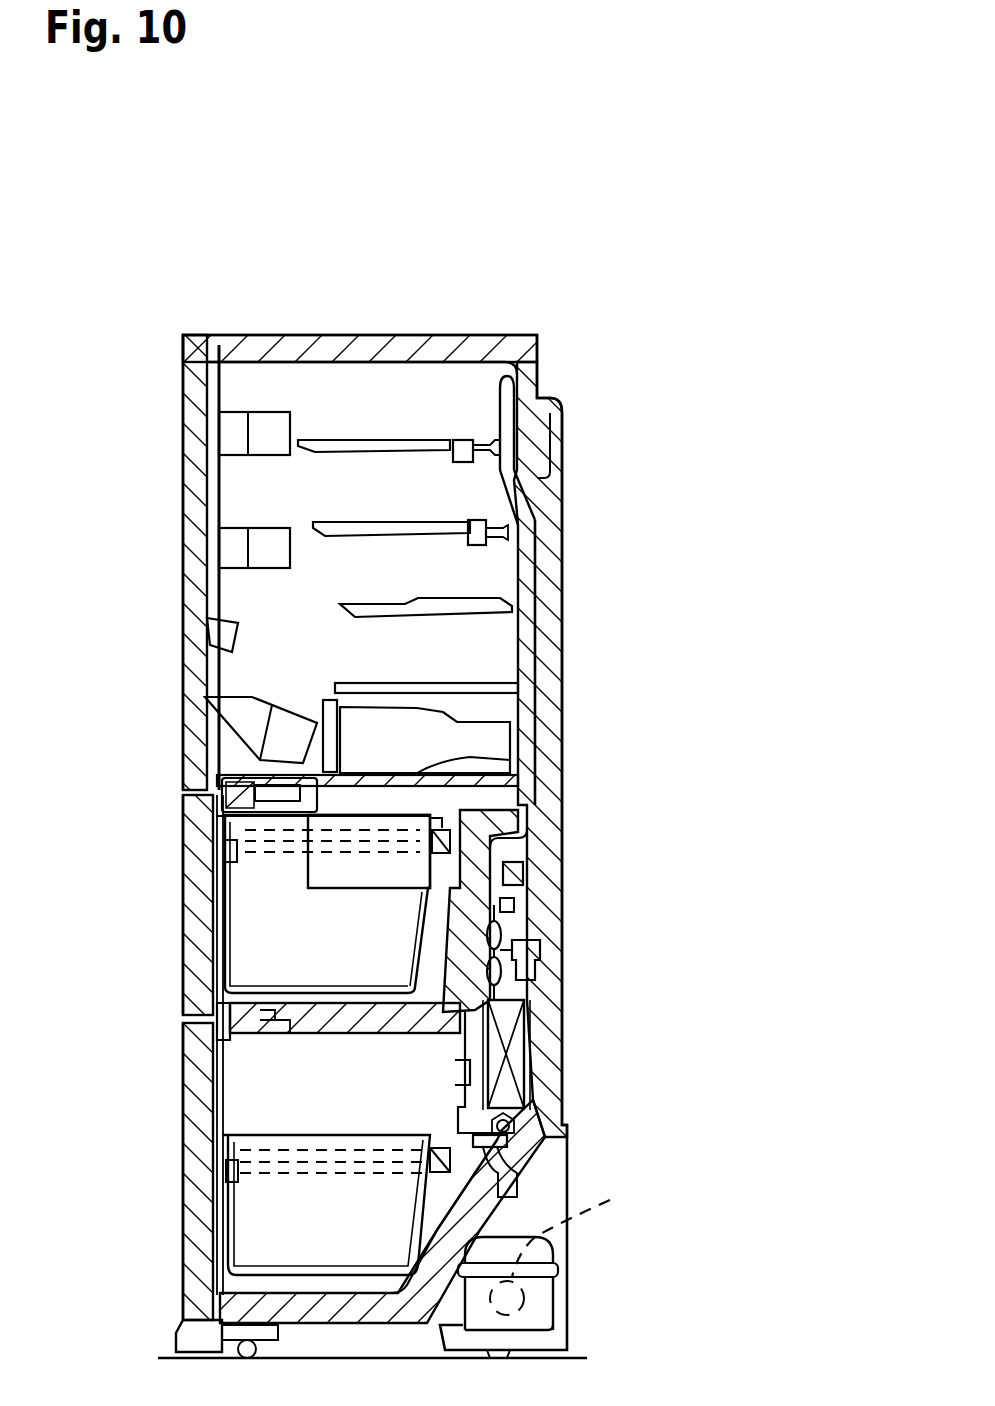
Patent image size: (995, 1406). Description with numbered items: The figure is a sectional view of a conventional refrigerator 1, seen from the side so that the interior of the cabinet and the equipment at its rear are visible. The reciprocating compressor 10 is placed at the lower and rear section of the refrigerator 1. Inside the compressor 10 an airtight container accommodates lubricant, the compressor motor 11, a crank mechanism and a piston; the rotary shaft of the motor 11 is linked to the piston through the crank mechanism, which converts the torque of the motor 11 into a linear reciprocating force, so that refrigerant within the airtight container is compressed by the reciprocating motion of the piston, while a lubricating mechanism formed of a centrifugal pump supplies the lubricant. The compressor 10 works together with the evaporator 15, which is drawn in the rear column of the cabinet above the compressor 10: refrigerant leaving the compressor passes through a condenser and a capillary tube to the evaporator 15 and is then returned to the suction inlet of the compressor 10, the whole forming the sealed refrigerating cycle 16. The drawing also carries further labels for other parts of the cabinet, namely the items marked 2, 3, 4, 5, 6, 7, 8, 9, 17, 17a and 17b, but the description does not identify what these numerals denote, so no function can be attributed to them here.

The refrigerator 1 is at (375, 207).
The outer case 2 is at (360, 342).
The heat insulating material 3 is at (432, 337).
The inner case 4 is at (488, 345).
The partition wall 5 is at (278, 990).
The refrigerating compartment 6 is at (380, 667).
The freezing compartment 7 is at (338, 1103).
The partition plate 8 is at (505, 762).
The vegetable compartment 9 is at (338, 957).
The reciprocating compressor 10 is at (555, 1288).
The motor 11 is at (591, 1224).
The evaporator 15 is at (513, 1053).
The refrigerating cycle 16 is at (513, 984).
The damper device 17 is at (707, 828).
The damper 17a is at (535, 935).
The damper motor 17b is at (527, 890).